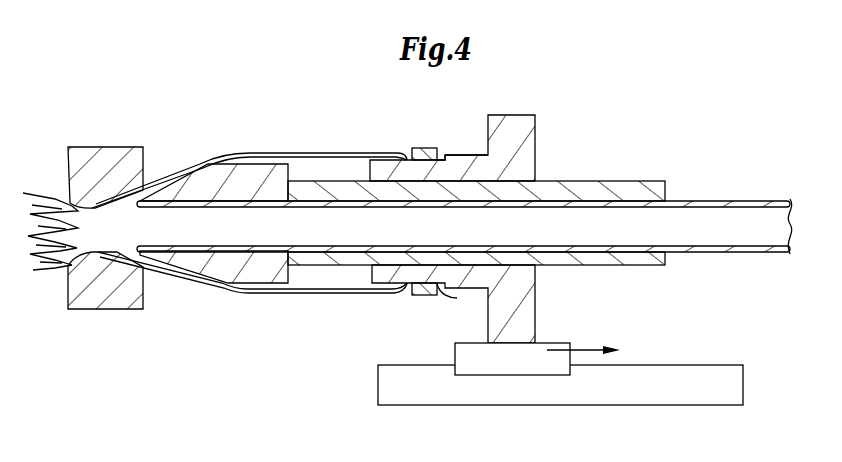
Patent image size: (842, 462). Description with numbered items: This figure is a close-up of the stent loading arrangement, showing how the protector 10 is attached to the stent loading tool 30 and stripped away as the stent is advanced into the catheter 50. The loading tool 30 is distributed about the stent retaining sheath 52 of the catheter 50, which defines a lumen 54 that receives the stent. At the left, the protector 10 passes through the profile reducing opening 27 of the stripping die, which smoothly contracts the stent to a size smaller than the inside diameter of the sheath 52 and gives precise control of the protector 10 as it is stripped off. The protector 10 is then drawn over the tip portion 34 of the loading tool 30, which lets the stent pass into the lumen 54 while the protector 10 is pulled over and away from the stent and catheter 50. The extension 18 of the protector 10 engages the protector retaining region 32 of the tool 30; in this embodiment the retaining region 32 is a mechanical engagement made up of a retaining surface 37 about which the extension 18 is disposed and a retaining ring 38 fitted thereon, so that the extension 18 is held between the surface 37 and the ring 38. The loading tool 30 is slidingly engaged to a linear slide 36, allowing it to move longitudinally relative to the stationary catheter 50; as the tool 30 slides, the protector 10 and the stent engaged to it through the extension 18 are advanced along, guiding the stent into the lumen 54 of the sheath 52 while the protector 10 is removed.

The protector 10 is at (328, 296).
The extension 18 is at (338, 157).
The profile reducing opening 27 is at (120, 164).
The stent loading tool 30 is at (574, 176).
The protector retaining region 32 is at (437, 158).
The tip portion 34 is at (210, 194).
The linear slide 36 is at (706, 374).
The retaining surface 37 is at (455, 170).
The retaining ring 38 is at (419, 142).
The catheter 50 is at (745, 201).
The stent retaining sheath 52 is at (688, 192).
The lumen 54 is at (748, 228).